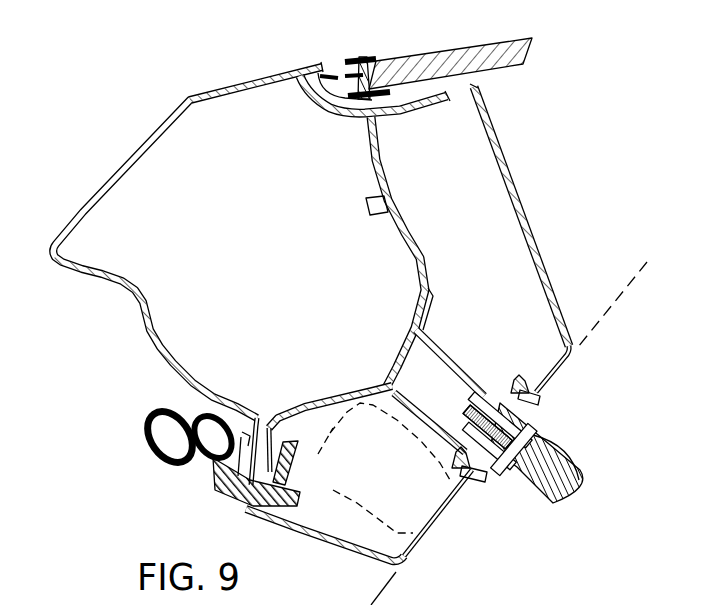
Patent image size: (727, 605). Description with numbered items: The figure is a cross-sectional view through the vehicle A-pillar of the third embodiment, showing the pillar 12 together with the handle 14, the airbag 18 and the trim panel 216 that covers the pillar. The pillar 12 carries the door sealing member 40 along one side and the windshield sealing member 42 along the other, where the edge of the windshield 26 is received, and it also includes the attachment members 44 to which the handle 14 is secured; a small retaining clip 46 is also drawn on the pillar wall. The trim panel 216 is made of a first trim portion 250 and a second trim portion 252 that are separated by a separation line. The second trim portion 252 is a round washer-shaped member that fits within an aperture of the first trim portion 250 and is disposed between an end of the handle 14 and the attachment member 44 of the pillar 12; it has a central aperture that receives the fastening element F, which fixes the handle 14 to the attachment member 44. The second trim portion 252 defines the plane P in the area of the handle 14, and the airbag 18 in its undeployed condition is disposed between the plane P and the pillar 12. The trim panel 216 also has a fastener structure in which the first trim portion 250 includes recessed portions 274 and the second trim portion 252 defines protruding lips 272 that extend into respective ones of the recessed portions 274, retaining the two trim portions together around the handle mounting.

The pillar 12 is at (118, 150).
The handle 14 is at (559, 453).
The airbag 18 is at (350, 505).
The windshield 26 is at (457, 57).
The door sealing member 40 is at (162, 447).
The windshield sealing member 42 is at (364, 57).
The attachment member 44 is at (452, 358).
The retaining clip 46 is at (387, 218).
The trim panel 216 is at (545, 238).
The first trim portion 250 is at (555, 297).
The second trim portion 252 is at (517, 490).
The protruding lip 272 is at (530, 402).
The recessed portion 274 is at (513, 376).
The plane P is at (635, 282).
The fastening element F is at (579, 484).